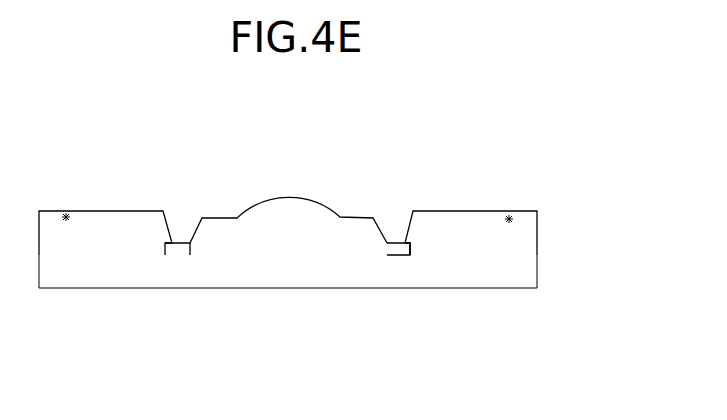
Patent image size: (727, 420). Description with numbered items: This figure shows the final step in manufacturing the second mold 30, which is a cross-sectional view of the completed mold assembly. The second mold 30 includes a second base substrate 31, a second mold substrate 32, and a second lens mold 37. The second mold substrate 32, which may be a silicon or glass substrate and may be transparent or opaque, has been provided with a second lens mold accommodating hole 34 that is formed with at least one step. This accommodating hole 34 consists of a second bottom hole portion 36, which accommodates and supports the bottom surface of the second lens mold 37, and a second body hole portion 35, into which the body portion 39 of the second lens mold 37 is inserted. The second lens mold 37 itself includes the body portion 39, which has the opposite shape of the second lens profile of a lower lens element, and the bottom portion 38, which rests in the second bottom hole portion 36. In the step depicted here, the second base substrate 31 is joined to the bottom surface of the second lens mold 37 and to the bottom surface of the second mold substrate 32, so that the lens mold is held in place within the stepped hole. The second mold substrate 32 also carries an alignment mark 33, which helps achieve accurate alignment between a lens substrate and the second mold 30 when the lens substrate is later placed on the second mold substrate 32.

The second mold 30 is at (560, 198).
The second base substrate 31 is at (513, 282).
The second mold substrate 32 is at (520, 235).
The alignment mark 33 is at (511, 215).
The second lens mold accommodating hole 34 is at (380, 318).
The second body hole portion 35 is at (397, 234).
The second bottom hole portion 36 is at (410, 250).
The second lens mold 37 is at (276, 298).
The bottom portion 38 is at (178, 252).
The body portion 39 is at (278, 203).